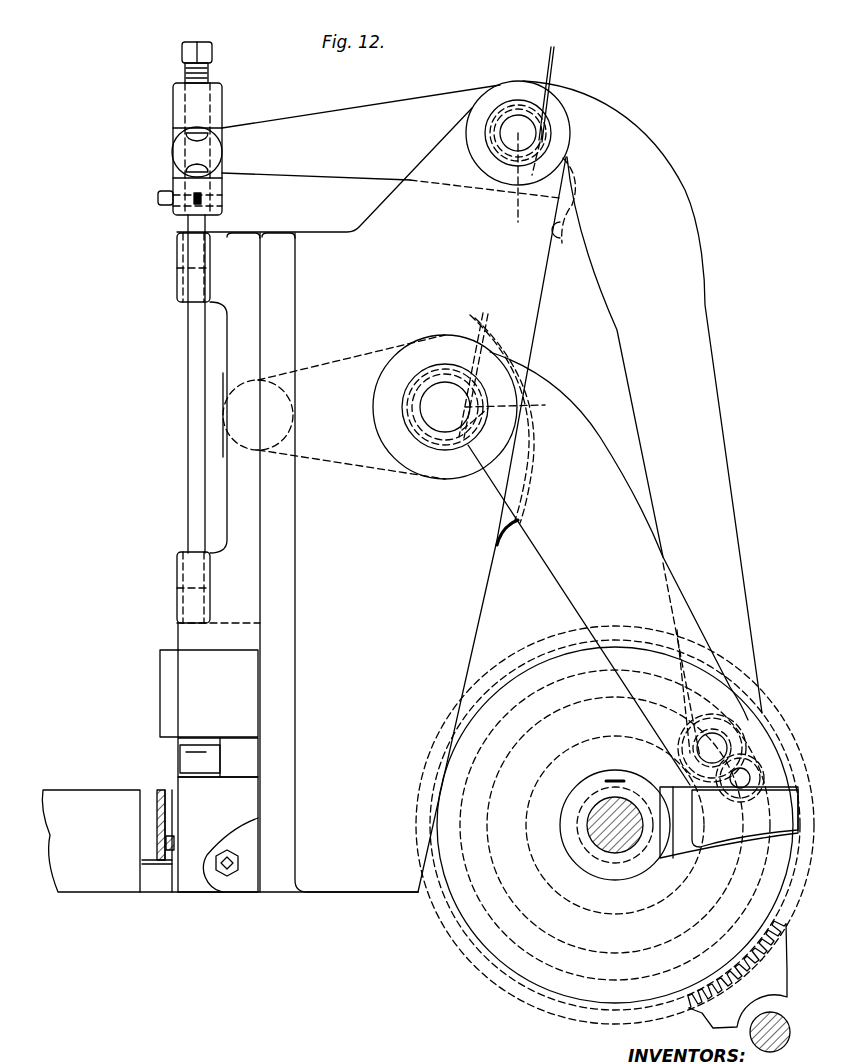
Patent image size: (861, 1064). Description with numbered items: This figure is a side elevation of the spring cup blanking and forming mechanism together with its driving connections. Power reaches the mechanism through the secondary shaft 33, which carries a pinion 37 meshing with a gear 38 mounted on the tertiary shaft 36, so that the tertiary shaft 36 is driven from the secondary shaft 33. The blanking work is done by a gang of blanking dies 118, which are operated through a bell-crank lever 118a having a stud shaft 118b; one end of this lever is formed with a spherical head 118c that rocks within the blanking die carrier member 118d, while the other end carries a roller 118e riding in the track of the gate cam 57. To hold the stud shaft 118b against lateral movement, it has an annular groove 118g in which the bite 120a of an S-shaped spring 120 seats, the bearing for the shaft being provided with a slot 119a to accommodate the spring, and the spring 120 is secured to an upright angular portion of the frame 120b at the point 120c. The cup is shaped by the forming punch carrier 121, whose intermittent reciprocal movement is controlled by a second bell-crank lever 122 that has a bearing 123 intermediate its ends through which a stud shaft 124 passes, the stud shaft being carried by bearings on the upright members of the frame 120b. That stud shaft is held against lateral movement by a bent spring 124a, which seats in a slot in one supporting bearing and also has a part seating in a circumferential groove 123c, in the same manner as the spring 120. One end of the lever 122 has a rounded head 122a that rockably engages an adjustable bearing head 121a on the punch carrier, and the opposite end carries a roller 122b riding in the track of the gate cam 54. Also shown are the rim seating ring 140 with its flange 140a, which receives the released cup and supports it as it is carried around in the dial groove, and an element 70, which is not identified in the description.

The secondary shaft 33 is at (790, 1027).
The tertiary shaft 36 is at (575, 812).
The pinion 37 is at (745, 974).
The gear 38 is at (786, 915).
The gate cam 54 is at (687, 872).
The gate cam 57 is at (577, 672).
The screw 70 is at (175, 842).
The gang of blanking dies 118 is at (209, 771).
The bell-crank lever 118a is at (584, 615).
The stud shaft 118b is at (446, 405).
The spherical head 118c is at (262, 378).
The blanking die carrier member 118d is at (244, 427).
The roller 118e is at (745, 712).
The annular groove 118g is at (470, 440).
The slot 119a is at (470, 358).
The S-shaped spring 120 is at (524, 462).
The bite 120a is at (516, 404).
The frame 120b is at (371, 500).
The securing point of spring 120c is at (502, 545).
The forming punch carrier 121 is at (195, 522).
The adjustable bearing head 121a is at (173, 104).
The bell-crank lever 122 is at (642, 397).
The rounded head 122a is at (172, 153).
The roller 122b is at (729, 822).
The bearing 123 is at (503, 90).
The circumferential groove 123c is at (532, 175).
The stud shaft 124 is at (515, 140).
The bent spring 124a is at (552, 66).
The rim seating ring 140 is at (168, 788).
The flange 140a is at (152, 792).